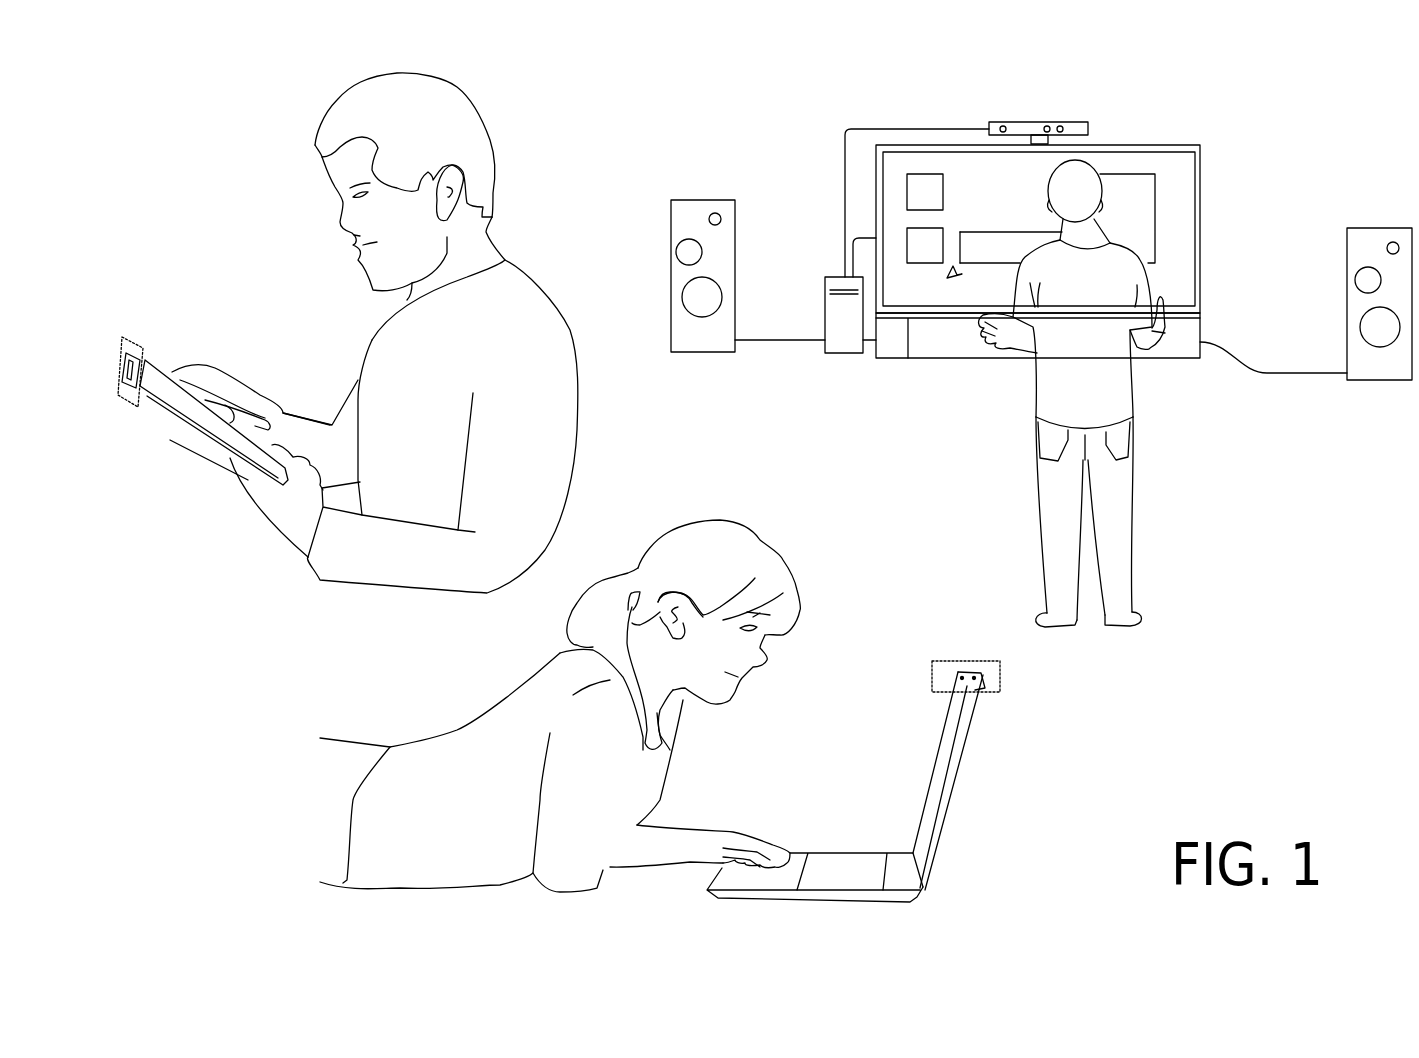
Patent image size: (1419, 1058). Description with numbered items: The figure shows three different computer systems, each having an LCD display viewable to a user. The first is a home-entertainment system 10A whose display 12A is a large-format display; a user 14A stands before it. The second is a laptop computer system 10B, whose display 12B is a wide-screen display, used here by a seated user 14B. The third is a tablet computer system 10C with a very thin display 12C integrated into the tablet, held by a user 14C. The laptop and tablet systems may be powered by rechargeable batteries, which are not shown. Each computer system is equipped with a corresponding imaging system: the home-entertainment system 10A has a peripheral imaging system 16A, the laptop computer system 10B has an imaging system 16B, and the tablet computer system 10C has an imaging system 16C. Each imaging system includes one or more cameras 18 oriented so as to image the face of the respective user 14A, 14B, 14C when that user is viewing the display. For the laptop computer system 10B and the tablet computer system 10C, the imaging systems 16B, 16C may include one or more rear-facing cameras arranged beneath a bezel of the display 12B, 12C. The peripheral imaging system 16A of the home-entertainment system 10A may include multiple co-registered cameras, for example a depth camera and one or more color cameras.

The home-entertainment system 10A is at (1276, 178).
The laptop computer system 10B is at (1028, 758).
The tablet computer system 10C is at (195, 345).
The display 12A is at (1021, 199).
The display 12B is at (943, 753).
The display 12C is at (183, 400).
The user 14A is at (1092, 405).
The user 14B is at (450, 802).
The user 14C is at (548, 367).
The peripheral imaging system 16A is at (1034, 122).
The imaging system 16B is at (970, 662).
The imaging system 16C is at (135, 340).
The camera 18 is at (1063, 124).